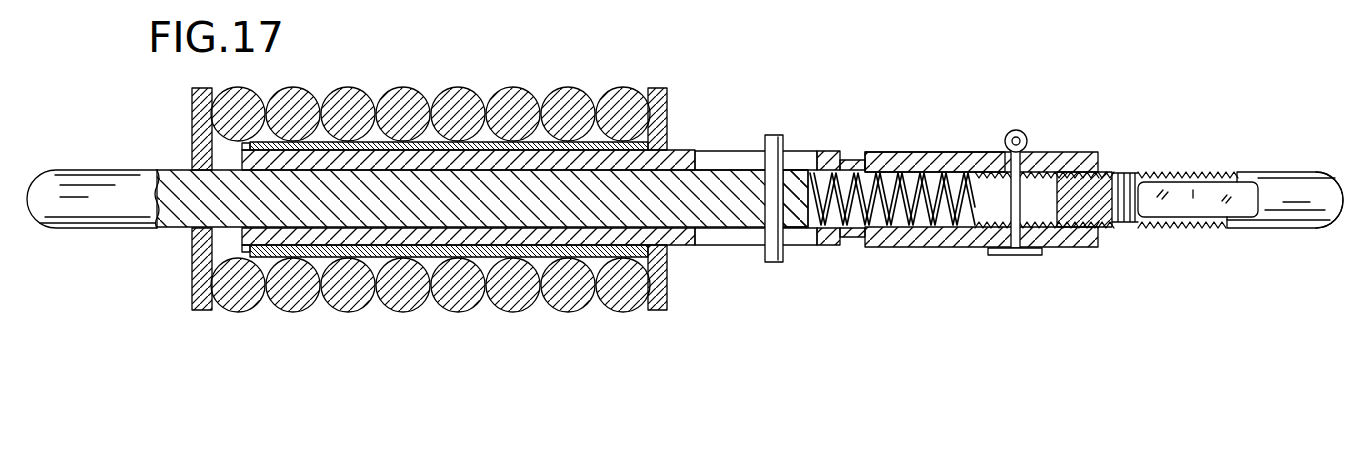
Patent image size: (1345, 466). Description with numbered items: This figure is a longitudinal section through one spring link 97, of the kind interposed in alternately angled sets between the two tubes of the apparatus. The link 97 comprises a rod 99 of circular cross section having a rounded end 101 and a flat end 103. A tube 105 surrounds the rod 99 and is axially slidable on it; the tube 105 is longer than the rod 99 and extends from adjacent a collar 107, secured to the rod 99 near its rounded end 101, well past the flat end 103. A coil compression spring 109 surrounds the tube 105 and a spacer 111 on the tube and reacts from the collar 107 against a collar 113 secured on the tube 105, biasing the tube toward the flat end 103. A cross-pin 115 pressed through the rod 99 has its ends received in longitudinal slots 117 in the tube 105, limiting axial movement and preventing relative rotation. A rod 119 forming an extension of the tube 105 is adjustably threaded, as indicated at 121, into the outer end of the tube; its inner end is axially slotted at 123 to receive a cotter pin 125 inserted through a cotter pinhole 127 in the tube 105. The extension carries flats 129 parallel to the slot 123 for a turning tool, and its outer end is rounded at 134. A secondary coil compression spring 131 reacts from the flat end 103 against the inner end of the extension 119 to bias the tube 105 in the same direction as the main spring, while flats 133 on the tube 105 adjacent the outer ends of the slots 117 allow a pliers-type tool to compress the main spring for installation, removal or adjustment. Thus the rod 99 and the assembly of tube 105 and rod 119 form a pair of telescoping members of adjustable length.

The link 97 is at (975, 108).
The rod 99 is at (190, 170).
The rounded end 101 is at (35, 215).
The flat end 103 is at (808, 215).
The tube 105 is at (947, 247).
The collar 107 is at (192, 307).
The coil compression spring 109 is at (430, 197).
The spacer 111 is at (303, 262).
The collar 113 is at (668, 106).
The cross-pin 115 is at (777, 134).
The longitudinal slots 117 is at (750, 137).
The rod 119 is at (1257, 220).
The threading 121 is at (1080, 228).
The slot 123 is at (997, 207).
The cotter pin 125 is at (1025, 137).
The cotter pinhole 127 is at (1006, 160).
The flats 129 is at (1193, 203).
The coil compression spring 131 is at (895, 215).
The flats 133 is at (843, 158).
The rounded outer end 134 is at (1343, 170).